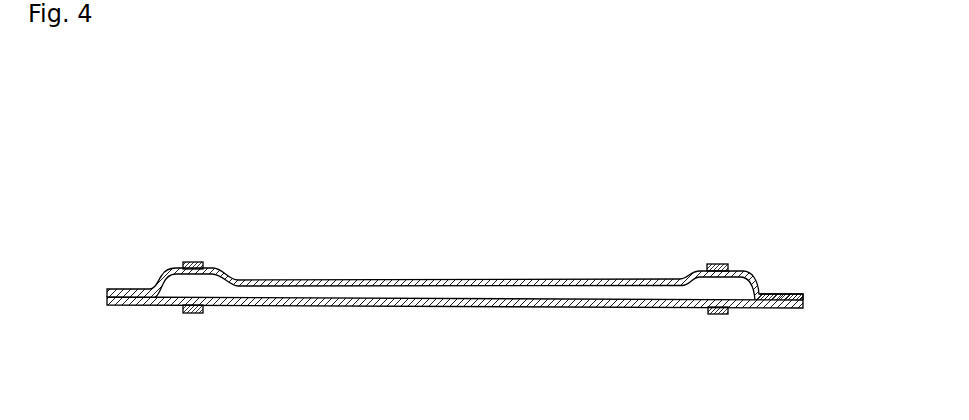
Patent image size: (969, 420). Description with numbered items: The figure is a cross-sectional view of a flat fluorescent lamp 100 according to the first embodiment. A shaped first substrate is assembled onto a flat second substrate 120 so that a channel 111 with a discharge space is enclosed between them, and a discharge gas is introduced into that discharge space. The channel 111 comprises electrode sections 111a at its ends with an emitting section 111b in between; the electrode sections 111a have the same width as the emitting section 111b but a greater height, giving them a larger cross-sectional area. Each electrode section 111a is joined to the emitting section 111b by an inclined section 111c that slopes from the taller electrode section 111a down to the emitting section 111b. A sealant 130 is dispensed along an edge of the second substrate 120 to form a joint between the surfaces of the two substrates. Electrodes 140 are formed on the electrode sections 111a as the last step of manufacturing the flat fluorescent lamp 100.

The flat fluorescent lamp 100 is at (548, 182).
The channel 111 is at (462, 278).
The electrode section 111a is at (177, 265).
The emitting section 111b is at (370, 278).
The inclined section 111c is at (233, 272).
The second substrate 120 is at (320, 307).
The sealant 130 is at (768, 300).
The electrode 140 is at (190, 262).